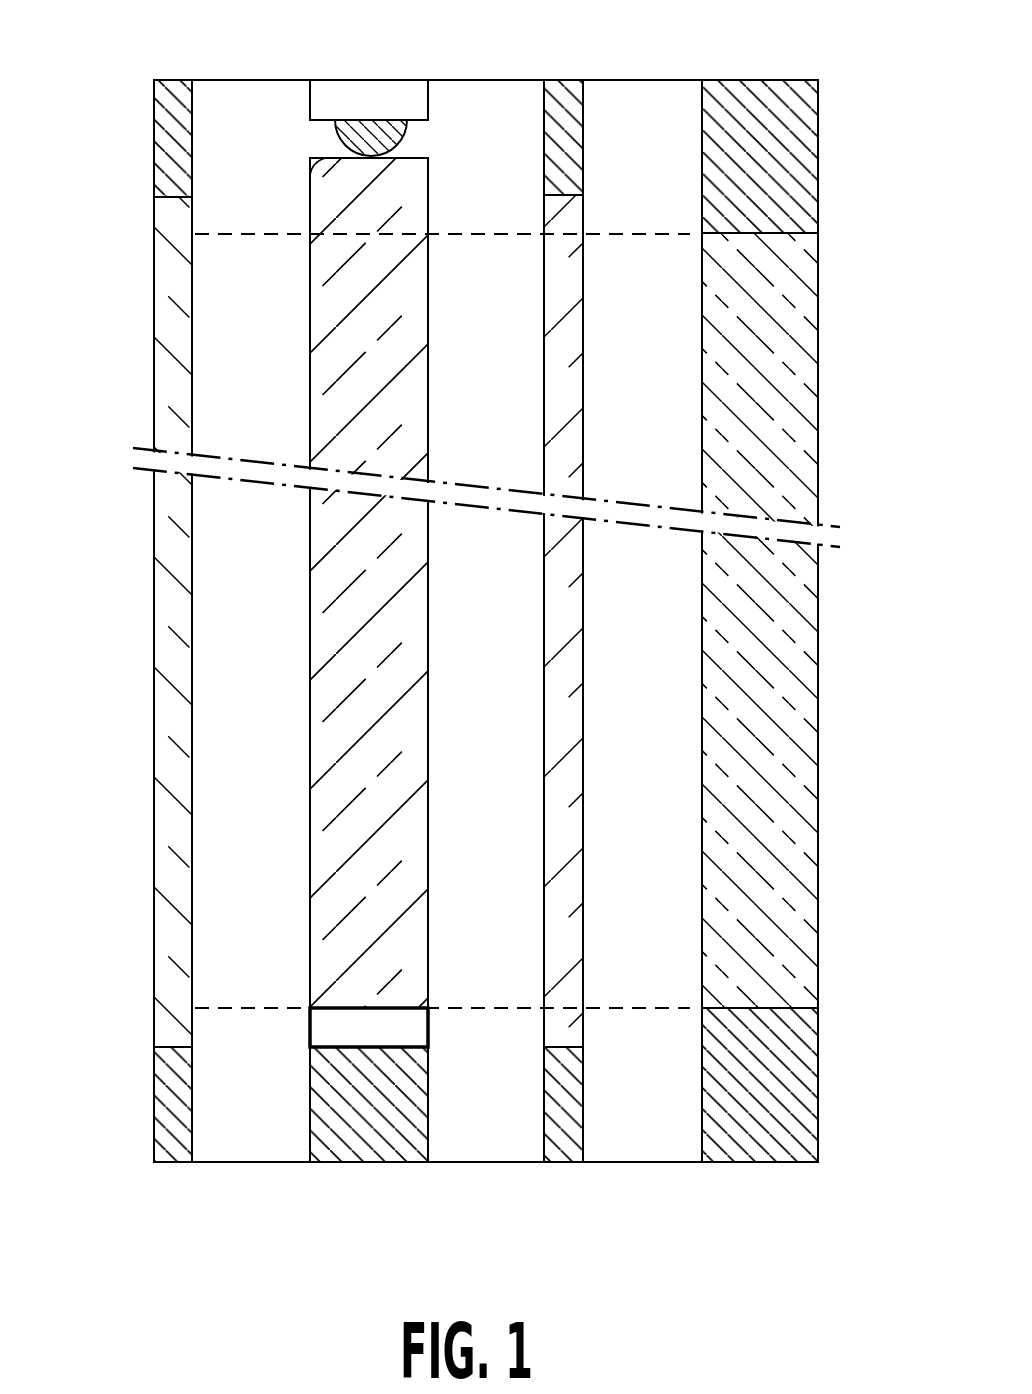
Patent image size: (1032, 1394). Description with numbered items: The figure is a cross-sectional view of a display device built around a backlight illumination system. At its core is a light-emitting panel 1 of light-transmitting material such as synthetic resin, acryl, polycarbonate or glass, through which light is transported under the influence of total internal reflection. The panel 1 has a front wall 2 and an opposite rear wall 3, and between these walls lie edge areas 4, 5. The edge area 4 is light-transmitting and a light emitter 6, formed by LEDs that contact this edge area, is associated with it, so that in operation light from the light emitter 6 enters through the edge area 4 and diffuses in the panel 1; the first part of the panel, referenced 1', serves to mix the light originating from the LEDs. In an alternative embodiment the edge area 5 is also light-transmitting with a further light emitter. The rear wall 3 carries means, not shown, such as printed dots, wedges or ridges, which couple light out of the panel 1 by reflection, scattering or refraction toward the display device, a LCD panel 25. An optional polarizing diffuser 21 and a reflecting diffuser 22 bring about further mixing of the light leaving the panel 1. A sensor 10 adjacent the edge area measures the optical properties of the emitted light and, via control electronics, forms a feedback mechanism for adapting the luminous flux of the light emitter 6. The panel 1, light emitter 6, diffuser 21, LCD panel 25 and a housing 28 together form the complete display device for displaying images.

The light-emitting panel 1 is at (396, 583).
The first part of the light-emitting panel 1' is at (399, 186).
The front wall 2 is at (429, 304).
The rear wall 3 is at (310, 824).
The edge area 4 is at (307, 175).
The edge area 5 is at (395, 1006).
The light emitter 6 is at (356, 135).
The sensor 10 is at (339, 1032).
The diffuser 21 is at (568, 318).
The reflecting diffuser 22 is at (170, 331).
The LCD panel 25 is at (790, 402).
The housing 28 is at (639, 1162).